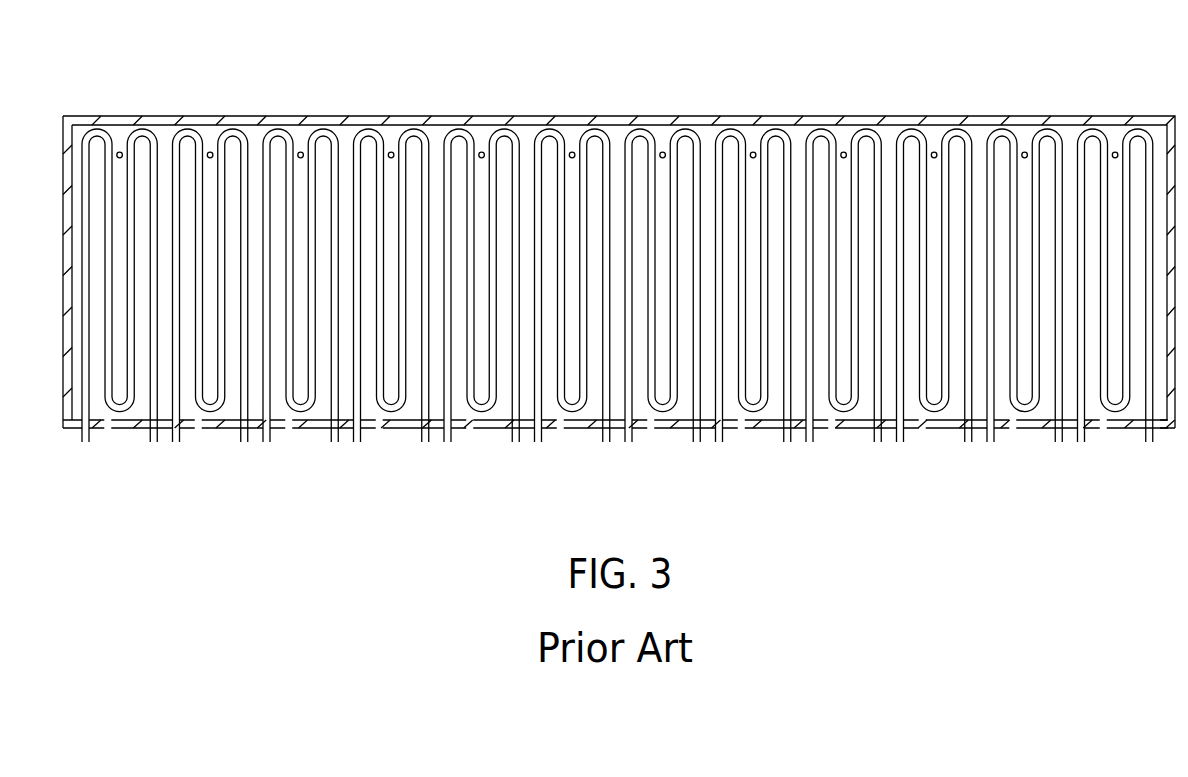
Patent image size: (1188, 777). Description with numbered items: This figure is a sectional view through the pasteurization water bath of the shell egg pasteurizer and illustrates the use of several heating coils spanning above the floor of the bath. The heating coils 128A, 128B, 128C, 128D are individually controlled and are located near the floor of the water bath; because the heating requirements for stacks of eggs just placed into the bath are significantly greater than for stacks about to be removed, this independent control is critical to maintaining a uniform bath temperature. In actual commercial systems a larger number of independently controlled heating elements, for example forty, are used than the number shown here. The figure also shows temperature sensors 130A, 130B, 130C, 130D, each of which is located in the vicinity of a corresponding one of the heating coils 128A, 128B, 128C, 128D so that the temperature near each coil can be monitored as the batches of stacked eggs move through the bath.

The heating coil 128A is at (930, 410).
The heating coil 128B is at (659, 410).
The heating coil 128C is at (387, 410).
The heating coil 128D is at (116, 410).
The temperature sensor 130A is at (934, 100).
The temperature sensor 130B is at (663, 100).
The temperature sensor 130C is at (391, 100).
The temperature sensor 130D is at (120, 100).